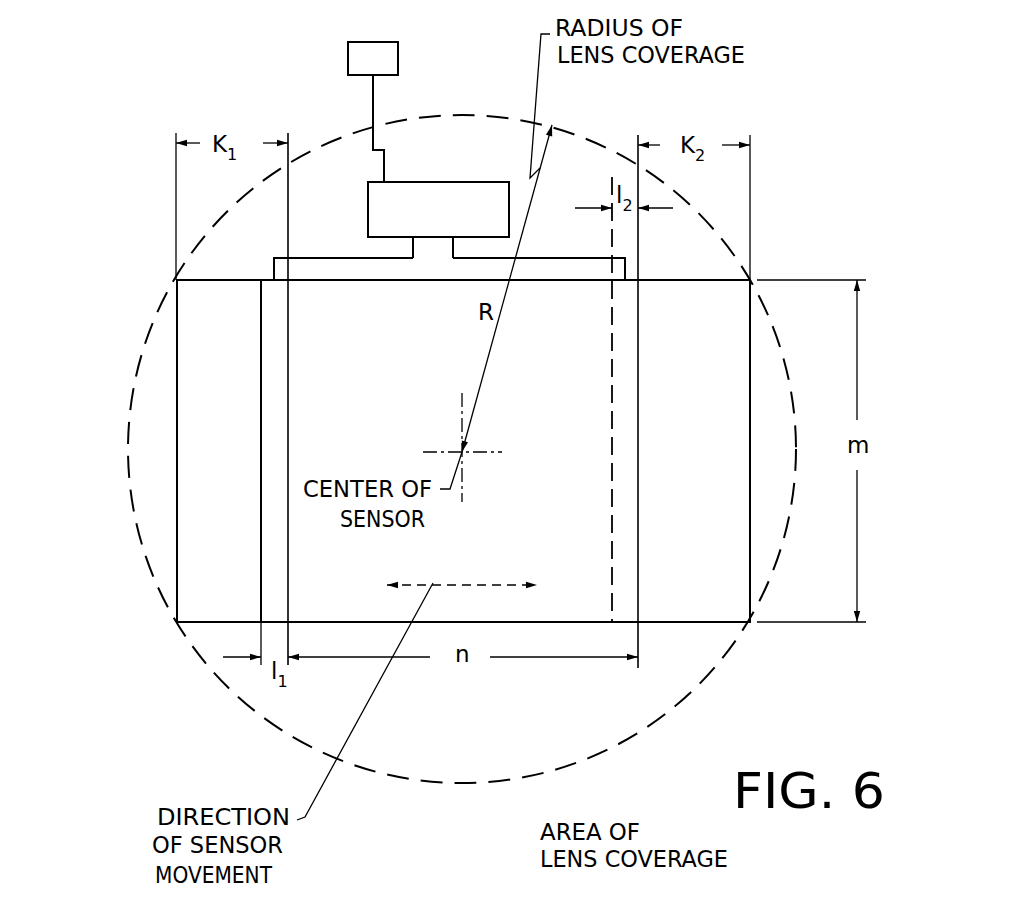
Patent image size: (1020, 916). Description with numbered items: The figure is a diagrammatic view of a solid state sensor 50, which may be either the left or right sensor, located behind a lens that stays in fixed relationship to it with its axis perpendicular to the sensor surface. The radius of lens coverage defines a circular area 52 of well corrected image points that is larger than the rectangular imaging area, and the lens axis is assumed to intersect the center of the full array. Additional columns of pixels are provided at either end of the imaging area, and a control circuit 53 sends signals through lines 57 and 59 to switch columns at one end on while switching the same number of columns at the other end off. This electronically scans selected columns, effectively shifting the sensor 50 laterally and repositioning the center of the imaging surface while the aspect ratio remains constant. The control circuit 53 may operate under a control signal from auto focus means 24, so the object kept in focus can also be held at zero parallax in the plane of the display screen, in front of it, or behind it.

The auto focus means 24 is at (350, 91).
The sensor 50 is at (403, 400).
The circular area 52 is at (462, 465).
The control circuit 53 is at (438, 197).
The line 57 is at (343, 247).
The line 59 is at (539, 250).